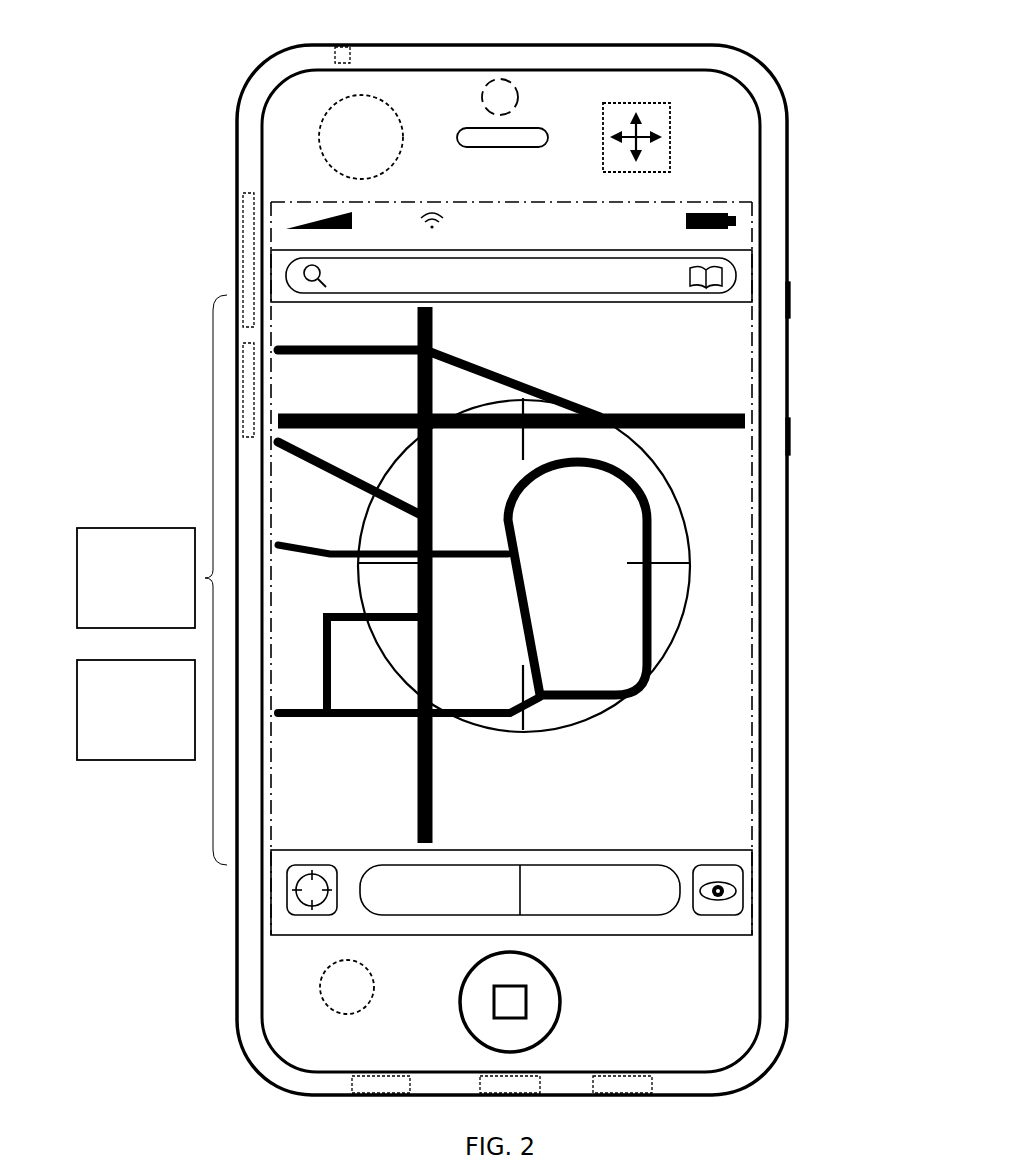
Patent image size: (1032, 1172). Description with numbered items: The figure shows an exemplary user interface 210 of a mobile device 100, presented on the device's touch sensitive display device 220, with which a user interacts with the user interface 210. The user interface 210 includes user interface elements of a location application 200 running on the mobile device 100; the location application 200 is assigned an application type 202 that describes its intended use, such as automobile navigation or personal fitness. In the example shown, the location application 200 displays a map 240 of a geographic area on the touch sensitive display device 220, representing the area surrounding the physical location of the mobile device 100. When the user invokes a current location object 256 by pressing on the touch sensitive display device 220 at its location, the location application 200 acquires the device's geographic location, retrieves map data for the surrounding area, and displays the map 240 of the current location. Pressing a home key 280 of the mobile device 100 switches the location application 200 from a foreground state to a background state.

The mobile device 100 is at (777, 83).
The location application 200 is at (122, 613).
The application type 202 is at (122, 746).
The user interface 210 is at (718, 538).
The touch sensitive display device 220 is at (750, 747).
The map 240 is at (718, 356).
The current location object 256 is at (330, 915).
The home key 280 is at (560, 1002).